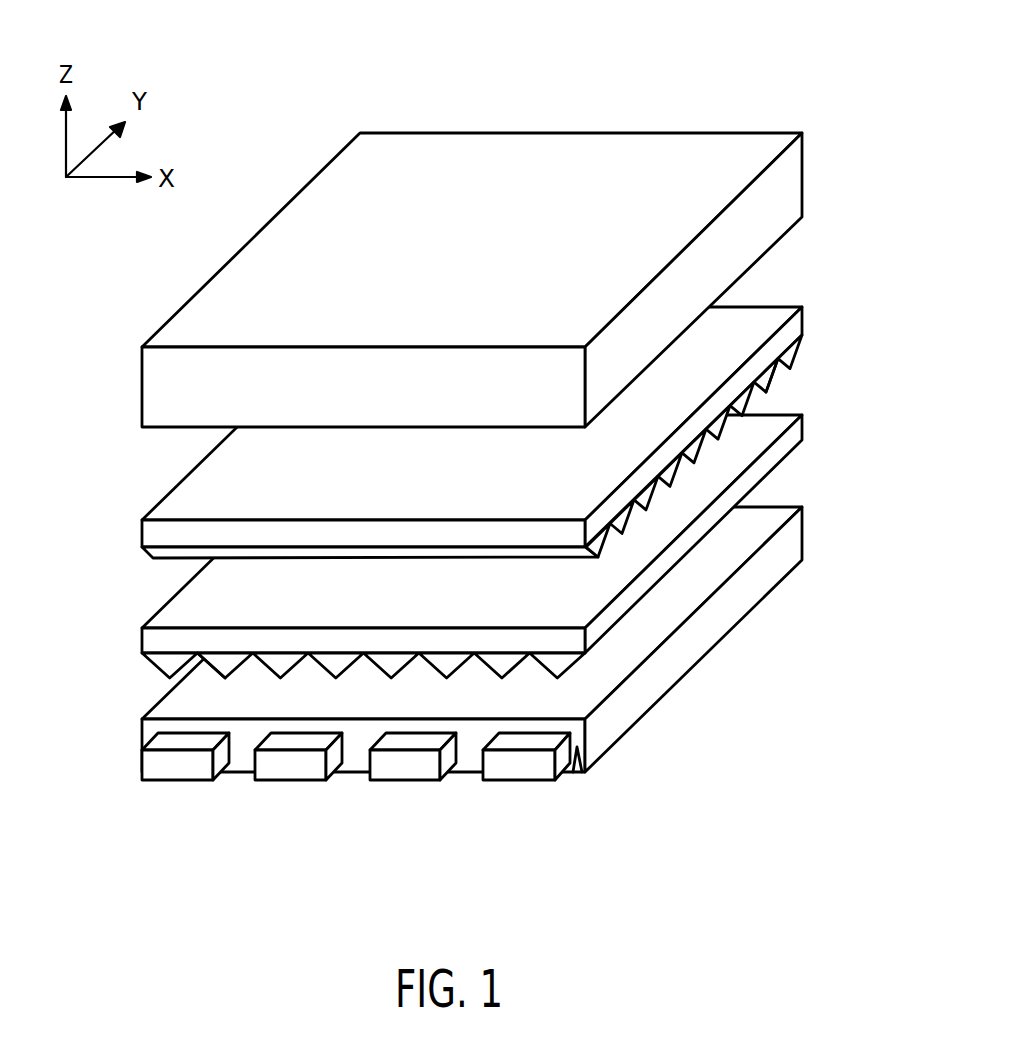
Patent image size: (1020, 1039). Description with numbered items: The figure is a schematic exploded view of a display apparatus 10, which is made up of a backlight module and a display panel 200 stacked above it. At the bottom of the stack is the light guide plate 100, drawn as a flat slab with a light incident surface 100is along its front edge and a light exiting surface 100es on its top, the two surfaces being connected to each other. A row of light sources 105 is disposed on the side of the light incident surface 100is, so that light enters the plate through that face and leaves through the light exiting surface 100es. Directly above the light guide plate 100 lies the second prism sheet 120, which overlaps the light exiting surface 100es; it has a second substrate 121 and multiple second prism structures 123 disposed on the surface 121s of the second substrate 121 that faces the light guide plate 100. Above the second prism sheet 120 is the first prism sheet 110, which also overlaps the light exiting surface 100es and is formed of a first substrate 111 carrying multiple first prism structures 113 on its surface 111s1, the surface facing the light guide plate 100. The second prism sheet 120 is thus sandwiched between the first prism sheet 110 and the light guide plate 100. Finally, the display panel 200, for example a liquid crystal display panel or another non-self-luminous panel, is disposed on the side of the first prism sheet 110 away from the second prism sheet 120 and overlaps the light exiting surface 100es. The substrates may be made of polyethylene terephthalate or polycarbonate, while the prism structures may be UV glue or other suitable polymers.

The display apparatus 10 is at (465, 508).
The light guide plate 100 is at (517, 651).
The light exiting surface 100es is at (744, 532).
The light incident surface 100is is at (582, 774).
The light source 105 is at (393, 768).
The first prism sheet 110 is at (532, 425).
The first substrate 111 is at (790, 333).
The first prism structures 113 is at (515, 443).
The surface 111s1 is at (780, 376).
The second prism sheet 120 is at (404, 569).
The second substrate 121 is at (163, 643).
The second prism structures 123 is at (296, 688).
The surface 121s is at (216, 664).
The display panel 200 is at (780, 195).